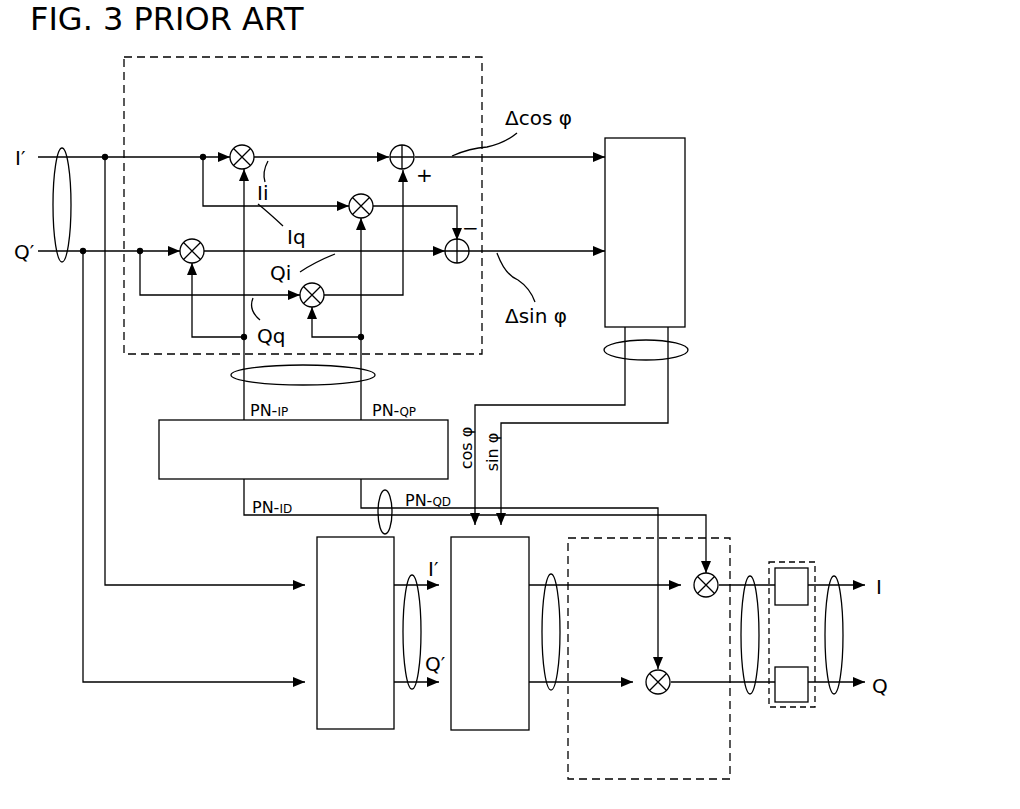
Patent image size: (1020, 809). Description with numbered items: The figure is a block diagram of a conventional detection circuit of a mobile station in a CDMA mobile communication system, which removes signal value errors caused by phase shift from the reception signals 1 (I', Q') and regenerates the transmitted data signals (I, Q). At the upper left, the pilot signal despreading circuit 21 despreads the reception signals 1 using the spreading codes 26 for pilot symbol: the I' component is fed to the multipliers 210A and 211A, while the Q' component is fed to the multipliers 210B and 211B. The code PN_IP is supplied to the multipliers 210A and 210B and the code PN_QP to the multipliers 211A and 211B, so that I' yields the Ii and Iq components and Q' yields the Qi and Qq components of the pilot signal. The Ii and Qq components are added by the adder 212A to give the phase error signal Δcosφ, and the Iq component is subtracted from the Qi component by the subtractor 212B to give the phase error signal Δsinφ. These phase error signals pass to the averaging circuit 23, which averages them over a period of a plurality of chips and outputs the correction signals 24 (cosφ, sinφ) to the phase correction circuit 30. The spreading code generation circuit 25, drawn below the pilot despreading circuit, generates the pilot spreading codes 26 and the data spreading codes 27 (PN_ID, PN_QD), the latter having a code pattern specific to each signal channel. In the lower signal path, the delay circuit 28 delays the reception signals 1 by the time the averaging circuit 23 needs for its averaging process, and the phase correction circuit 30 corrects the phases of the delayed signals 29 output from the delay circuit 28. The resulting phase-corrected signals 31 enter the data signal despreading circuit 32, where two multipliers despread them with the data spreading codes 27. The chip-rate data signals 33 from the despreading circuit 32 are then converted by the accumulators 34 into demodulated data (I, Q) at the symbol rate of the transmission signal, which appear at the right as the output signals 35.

The reception signals 1 is at (62, 262).
The pilot signal despreading circuit 21 is at (375, 57).
The multiplier 210A is at (233, 147).
The multiplier 210B is at (182, 240).
The multiplier 211A is at (350, 197).
The multiplier 211B is at (322, 306).
The adder 212A is at (442, 133).
The subtractor 212B is at (457, 268).
The averaging circuit 23 is at (662, 138).
The correction signals 24 is at (688, 352).
The spreading code generation circuit 25 is at (185, 480).
The spreading codes for pilot symbol 26 is at (231, 375).
The spreading codes for data symbol 27 is at (378, 525).
The delay circuit 28 is at (317, 705).
The delayed signals 29 is at (410, 690).
The phase correction circuit 30 is at (505, 730).
The phase-corrected signals 31 is at (550, 690).
The data signal despreading circuit 32 is at (732, 766).
The data signals 33 is at (748, 577).
The accumulators 34 is at (790, 707).
The output data signals I and Q 35 is at (830, 578).